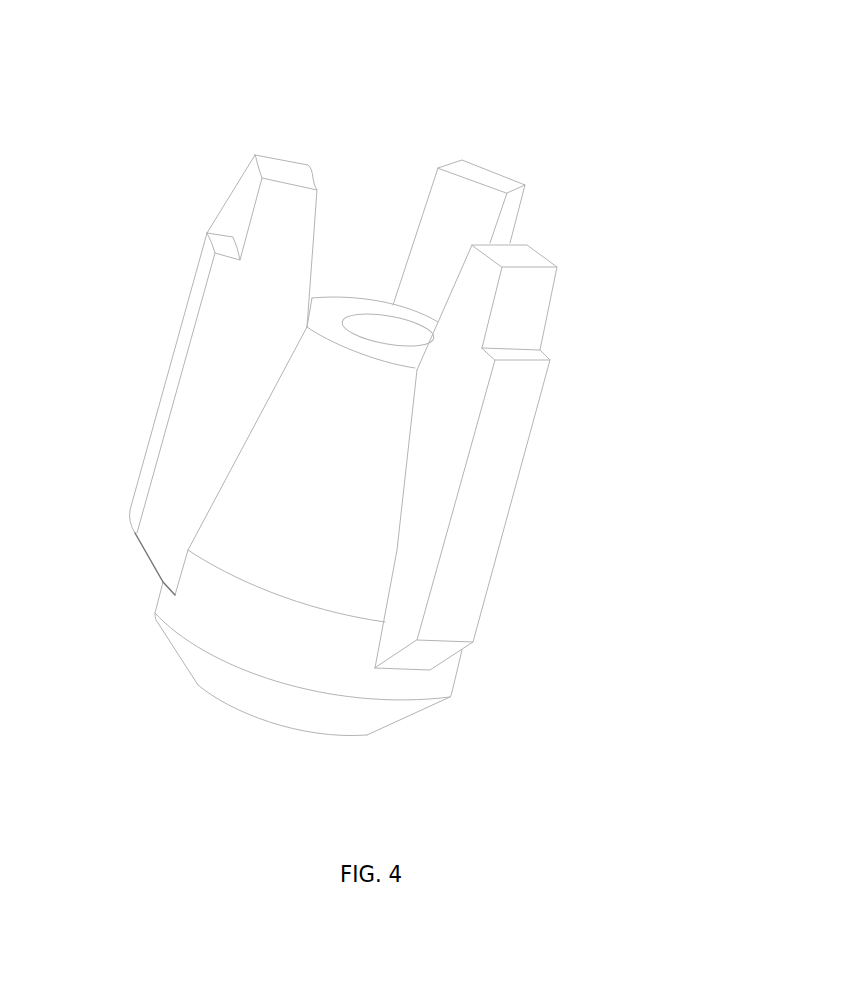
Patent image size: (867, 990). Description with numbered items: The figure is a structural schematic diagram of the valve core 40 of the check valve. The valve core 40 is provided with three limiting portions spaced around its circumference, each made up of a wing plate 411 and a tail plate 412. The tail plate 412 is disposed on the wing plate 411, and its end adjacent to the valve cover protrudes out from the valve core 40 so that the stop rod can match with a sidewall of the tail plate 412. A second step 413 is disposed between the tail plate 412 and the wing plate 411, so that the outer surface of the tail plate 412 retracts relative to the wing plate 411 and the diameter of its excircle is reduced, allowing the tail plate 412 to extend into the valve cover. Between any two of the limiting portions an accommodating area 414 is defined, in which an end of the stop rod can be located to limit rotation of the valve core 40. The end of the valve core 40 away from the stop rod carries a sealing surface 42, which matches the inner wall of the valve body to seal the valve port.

The valve core 40 is at (247, 600).
The sealing surface 42 is at (317, 720).
The wing plate 411 is at (178, 368).
The tail plate 412 is at (510, 177).
The second step 413 is at (523, 352).
The accommodating area 414 is at (362, 167).